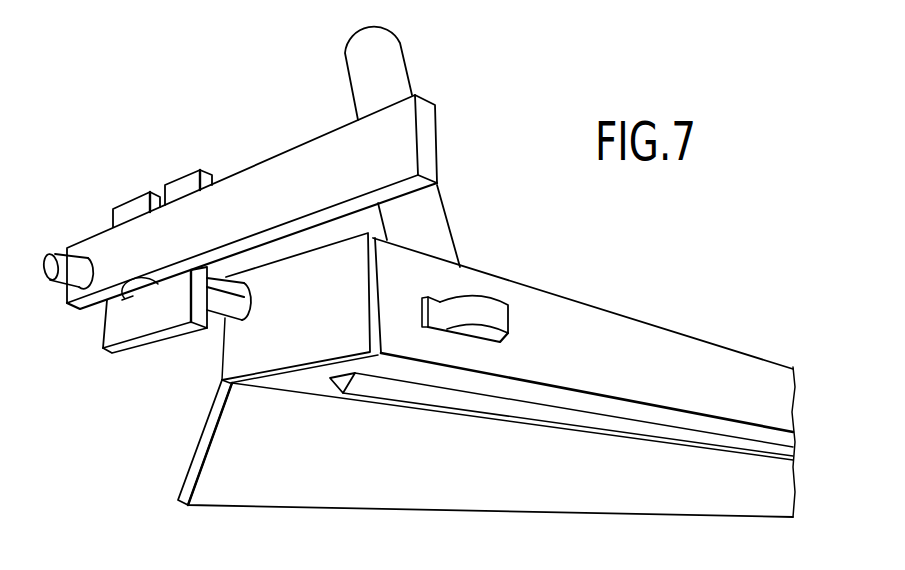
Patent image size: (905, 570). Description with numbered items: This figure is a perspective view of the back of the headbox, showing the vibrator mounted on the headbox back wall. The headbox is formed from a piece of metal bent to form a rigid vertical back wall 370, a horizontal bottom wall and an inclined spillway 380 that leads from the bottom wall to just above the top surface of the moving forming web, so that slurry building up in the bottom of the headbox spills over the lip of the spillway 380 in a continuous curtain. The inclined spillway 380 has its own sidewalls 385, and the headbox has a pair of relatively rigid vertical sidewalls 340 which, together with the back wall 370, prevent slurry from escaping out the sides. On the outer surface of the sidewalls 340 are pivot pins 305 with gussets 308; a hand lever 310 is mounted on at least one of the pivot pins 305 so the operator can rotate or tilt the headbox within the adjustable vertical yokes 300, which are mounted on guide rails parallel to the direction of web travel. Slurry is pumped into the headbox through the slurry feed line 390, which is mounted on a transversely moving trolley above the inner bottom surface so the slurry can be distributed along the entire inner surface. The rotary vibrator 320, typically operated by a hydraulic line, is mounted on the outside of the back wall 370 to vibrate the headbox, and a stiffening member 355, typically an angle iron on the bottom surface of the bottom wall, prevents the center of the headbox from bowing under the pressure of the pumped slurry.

The adjustable vertical yokes 300 is at (132, 203).
The pivot pins 305 is at (53, 257).
The gussets 308 is at (233, 283).
The hand lever 310 is at (287, 163).
The rotary vibrator 320 is at (510, 315).
The sidewalls 340 is at (377, 268).
The stiffening member 355 is at (507, 410).
The back wall 370 is at (647, 345).
The spillway 380 is at (230, 447).
The spillway sidewalls 385 is at (215, 403).
The slurry feed line 390 is at (388, 63).